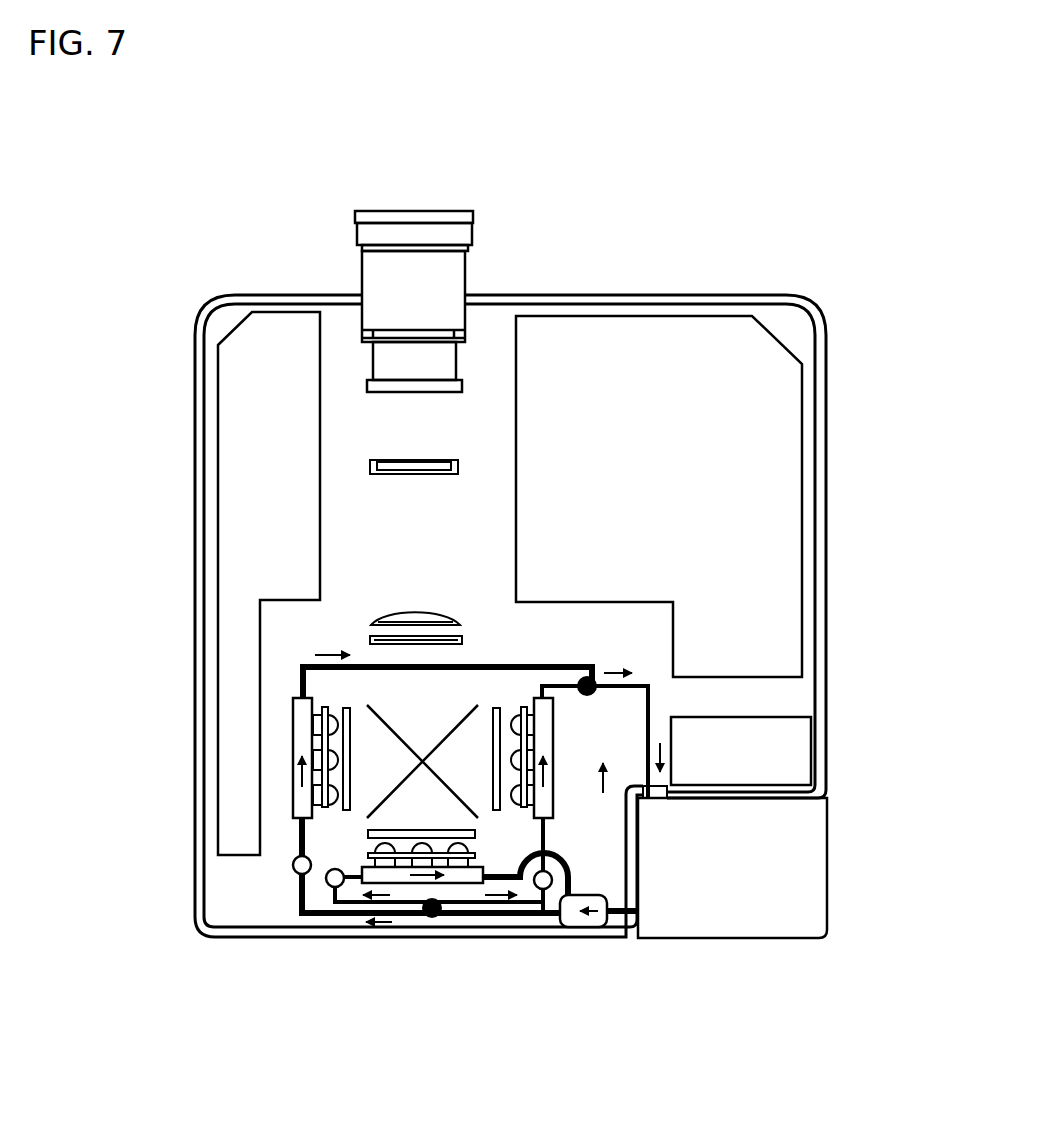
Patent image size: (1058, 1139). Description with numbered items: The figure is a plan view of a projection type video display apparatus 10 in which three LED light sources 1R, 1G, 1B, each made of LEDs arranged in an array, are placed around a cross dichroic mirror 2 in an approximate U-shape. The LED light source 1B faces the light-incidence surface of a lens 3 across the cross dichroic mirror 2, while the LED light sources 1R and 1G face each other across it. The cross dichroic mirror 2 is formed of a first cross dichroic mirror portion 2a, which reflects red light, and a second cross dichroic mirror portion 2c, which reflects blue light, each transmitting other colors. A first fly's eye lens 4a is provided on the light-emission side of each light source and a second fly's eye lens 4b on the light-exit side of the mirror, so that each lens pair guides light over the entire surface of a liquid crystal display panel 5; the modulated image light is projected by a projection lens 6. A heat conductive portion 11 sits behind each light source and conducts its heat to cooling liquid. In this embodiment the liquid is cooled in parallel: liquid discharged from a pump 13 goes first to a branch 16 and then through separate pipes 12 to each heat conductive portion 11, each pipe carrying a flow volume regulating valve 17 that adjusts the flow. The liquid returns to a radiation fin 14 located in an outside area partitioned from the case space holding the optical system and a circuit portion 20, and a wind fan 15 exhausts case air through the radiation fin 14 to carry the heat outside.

The LED light source 1B is at (222, 759).
The LED light source 1G is at (378, 858).
The LED light source 1R is at (516, 808).
The cross dichroic mirror 2 is at (222, 728).
The first cross dichroic mirror portion 2a is at (322, 712).
The second cross dichroic mirror portion 2c is at (345, 703).
The lens 3 is at (372, 614).
The first fly's eye lens 4a is at (346, 812).
The second fly's eye lens 4b is at (462, 638).
The liquid crystal display panel 5 is at (372, 466).
The projection lens 6 is at (455, 278).
The projection type video display apparatus 10 is at (862, 530).
The heat conductive portion 11 is at (300, 737).
The pipe 12 is at (303, 663).
The pump 13 is at (577, 928).
The radiation fin 14 is at (740, 936).
The wind fan 15 is at (803, 752).
The branch 16 is at (432, 918).
The flow volume regulating valve 17 is at (298, 873).
The circuit portion 20 is at (230, 372).